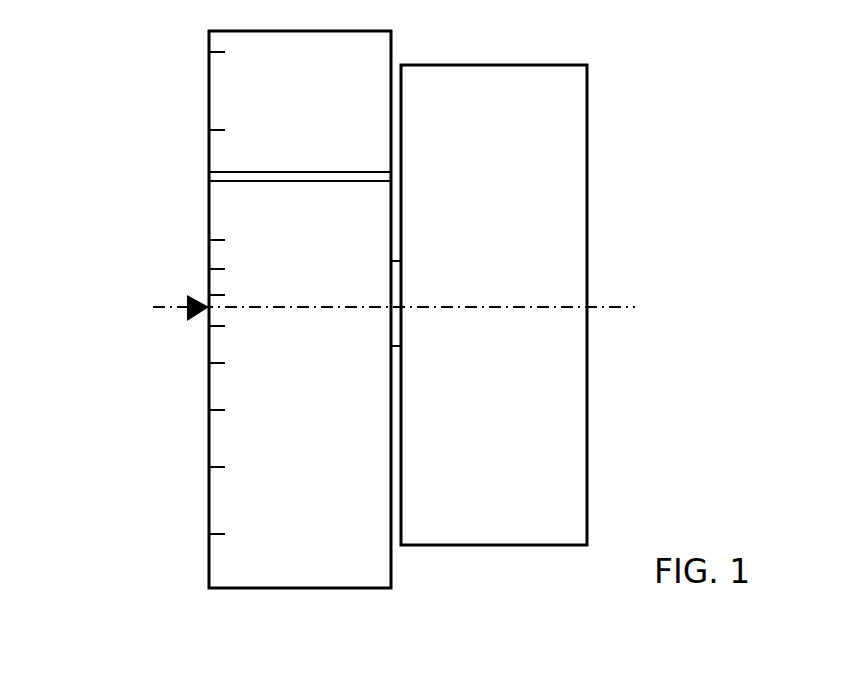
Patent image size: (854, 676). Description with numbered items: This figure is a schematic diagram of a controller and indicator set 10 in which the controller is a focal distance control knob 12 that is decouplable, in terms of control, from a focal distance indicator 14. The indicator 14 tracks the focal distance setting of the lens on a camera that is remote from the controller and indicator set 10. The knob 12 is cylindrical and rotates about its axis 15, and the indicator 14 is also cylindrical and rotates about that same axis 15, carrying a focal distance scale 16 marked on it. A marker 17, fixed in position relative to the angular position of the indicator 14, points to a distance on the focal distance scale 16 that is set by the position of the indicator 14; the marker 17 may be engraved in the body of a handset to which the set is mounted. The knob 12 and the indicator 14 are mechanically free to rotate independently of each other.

The controller and indicator set 10 is at (104, 39).
The focal distance control knob 12 is at (587, 235).
The focal distance indicator 14 is at (392, 44).
The axis 15 is at (625, 307).
The focal distance scale 16 is at (274, 228).
The marker 17 is at (190, 302).